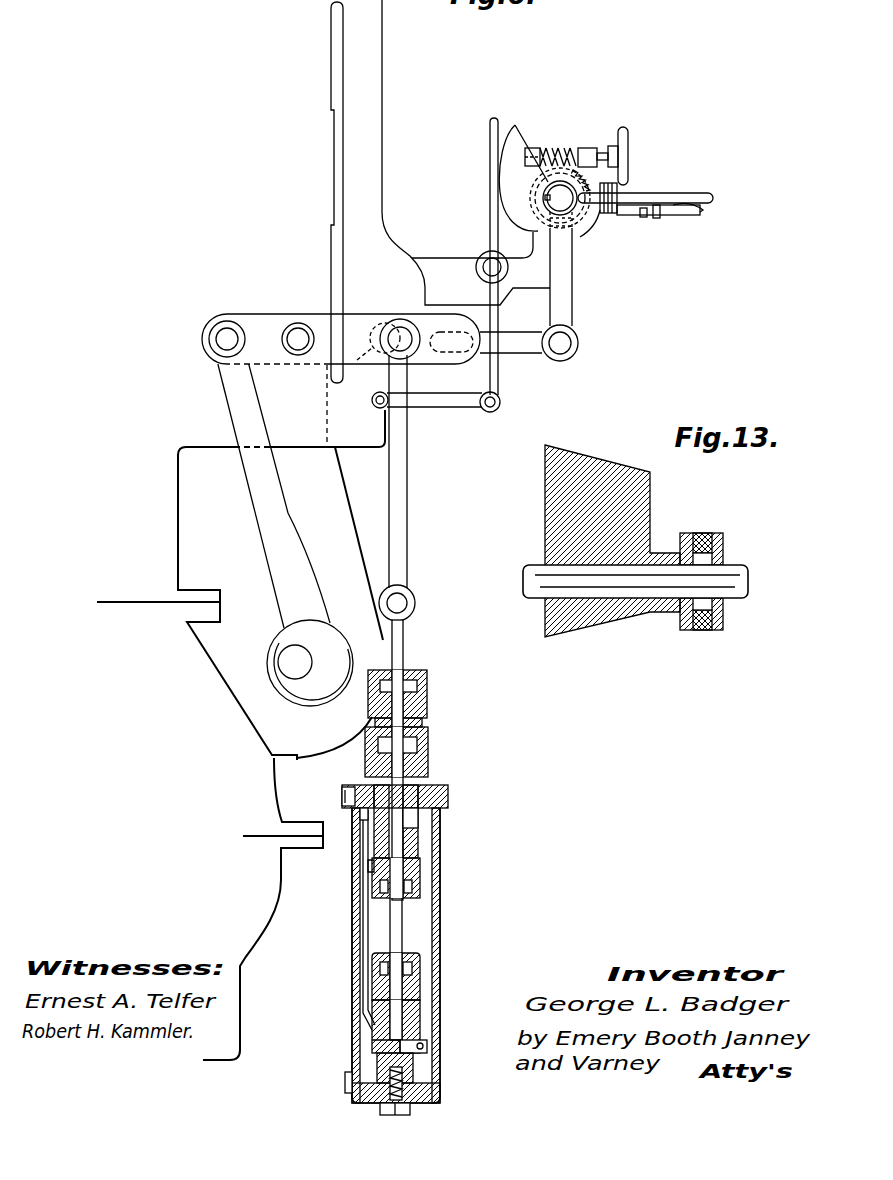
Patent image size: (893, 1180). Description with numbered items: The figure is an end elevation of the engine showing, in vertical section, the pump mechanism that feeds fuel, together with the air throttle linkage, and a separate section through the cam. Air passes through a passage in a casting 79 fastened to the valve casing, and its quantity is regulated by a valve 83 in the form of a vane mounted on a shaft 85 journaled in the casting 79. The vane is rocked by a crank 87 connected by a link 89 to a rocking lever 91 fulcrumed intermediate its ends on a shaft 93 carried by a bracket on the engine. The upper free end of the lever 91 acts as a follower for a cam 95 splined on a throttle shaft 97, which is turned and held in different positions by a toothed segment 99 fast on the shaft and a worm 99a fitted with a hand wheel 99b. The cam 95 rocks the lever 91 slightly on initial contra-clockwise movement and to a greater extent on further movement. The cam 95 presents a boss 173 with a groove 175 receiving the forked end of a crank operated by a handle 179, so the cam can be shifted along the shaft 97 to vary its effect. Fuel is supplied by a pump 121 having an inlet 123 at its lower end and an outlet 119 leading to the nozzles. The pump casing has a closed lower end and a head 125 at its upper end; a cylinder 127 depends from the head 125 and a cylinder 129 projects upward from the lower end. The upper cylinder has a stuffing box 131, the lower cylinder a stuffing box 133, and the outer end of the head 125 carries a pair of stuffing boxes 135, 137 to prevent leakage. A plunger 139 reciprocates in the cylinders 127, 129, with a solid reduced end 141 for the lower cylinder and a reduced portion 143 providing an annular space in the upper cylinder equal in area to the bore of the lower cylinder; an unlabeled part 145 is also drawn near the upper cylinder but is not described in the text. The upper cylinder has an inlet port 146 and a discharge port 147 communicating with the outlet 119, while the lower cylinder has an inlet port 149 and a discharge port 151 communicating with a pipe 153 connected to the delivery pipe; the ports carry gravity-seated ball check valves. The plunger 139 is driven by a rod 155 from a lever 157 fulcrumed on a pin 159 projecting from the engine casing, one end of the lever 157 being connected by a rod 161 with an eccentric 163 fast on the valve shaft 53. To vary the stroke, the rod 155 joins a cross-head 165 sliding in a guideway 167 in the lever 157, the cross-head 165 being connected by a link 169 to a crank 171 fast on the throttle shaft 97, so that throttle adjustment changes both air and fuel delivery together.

In FIG. 6, the valve shaft 53 is at (287, 662).
In FIG. 6, the casting 79 is at (367, 100).
In FIG. 6, the valve 83 is at (425, 257).
In FIG. 6, the shaft 85 is at (373, 317).
In FIG. 6, the crank 87 is at (378, 378).
In FIG. 6, the link 89 is at (441, 404).
In FIG. 6, the rocking lever 91 is at (497, 375).
In FIG. 6, the shaft 93 is at (490, 257).
In FIG. 6, the cam 95 is at (510, 143).
In FIG. 13, the cam 95 is at (606, 472).
In FIG. 6, the throttle shaft 97 is at (565, 202).
In FIG. 13, the throttle shaft 97 is at (750, 587).
In FIG. 6, the toothed segment 99 is at (577, 167).
In FIG. 6, the worm 99a is at (555, 147).
In FIG. 6, the hand wheel 99b is at (627, 142).
In FIG. 6, the outlet 119 is at (345, 793).
In FIG. 6, the pump 121 is at (440, 857).
In FIG. 6, the inlet 123 is at (347, 1080).
In FIG. 6, the head 125 is at (435, 785).
In FIG. 6, the cylinder 127 is at (395, 828).
In FIG. 6, the cylinder 129 is at (449, 1036).
In FIG. 6, the stuffing box 131 is at (420, 890).
In FIG. 6, the stuffing box 133 is at (417, 975).
In FIG. 6, the stuffing box 135 is at (427, 683).
In FIG. 6, the stuffing box 137 is at (430, 745).
In FIG. 6, the plunger 139 is at (398, 932).
In FIG. 6, the reduced end 141 is at (397, 1035).
In FIG. 6, the reduced portion 143 is at (417, 833).
In FIG. 6, the clip 145 is at (366, 868).
In FIG. 6, the inlet port 146 is at (418, 792).
In FIG. 6, the discharge port 147 is at (363, 812).
In FIG. 6, the inlet port 149 is at (427, 1053).
In FIG. 6, the discharge port 151 is at (377, 1045).
In FIG. 6, the pipe 153 is at (363, 930).
In FIG. 6, the rod 155 is at (406, 497).
In FIG. 6, the lever 157 is at (255, 313).
In FIG. 6, the pin 159 is at (297, 330).
In FIG. 6, the rod 161 is at (227, 400).
In FIG. 6, the eccentric 163 is at (293, 633).
In FIG. 6, the cross-head 165 is at (415, 328).
In FIG. 6, the guideway 167 is at (480, 323).
In FIG. 6, the link 169 is at (517, 347).
In FIG. 6, the crank 171 is at (562, 302).
In FIG. 13, the boss 173 is at (723, 548).
In FIG. 13, the groove 175 is at (706, 533).
In FIG. 6, the handle 179 is at (660, 195).